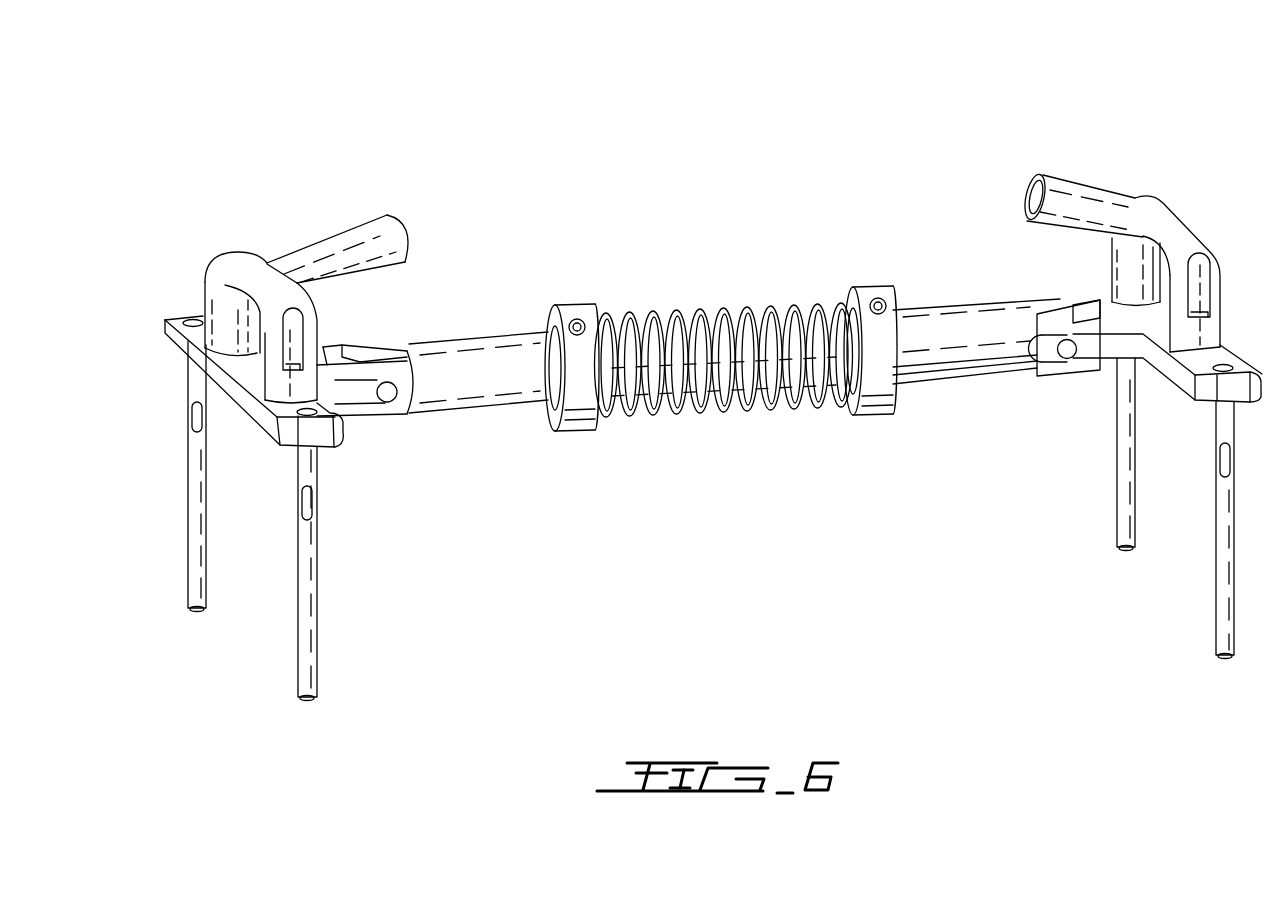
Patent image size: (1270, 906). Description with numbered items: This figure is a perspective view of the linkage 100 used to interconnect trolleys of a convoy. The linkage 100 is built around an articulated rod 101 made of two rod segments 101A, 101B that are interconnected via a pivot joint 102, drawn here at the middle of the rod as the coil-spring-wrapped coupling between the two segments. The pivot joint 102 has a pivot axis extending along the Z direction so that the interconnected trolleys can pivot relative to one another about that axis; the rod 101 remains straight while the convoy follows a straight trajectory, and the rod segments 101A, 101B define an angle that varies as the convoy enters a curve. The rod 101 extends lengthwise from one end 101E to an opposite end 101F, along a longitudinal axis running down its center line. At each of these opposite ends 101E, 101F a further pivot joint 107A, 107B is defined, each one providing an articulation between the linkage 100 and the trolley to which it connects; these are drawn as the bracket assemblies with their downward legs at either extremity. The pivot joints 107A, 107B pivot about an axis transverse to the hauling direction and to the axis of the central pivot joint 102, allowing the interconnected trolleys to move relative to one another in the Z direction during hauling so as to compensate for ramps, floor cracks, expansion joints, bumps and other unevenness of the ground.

The linkage 100 is at (185, 167).
The articulated rod 101 is at (480, 305).
The rod segment 101A is at (502, 387).
The rod segment 101B is at (960, 385).
The end of the rod 101E is at (375, 432).
The opposite end of the rod 101F is at (1067, 390).
The pivot joint 102 is at (745, 335).
The pivot joint 107A is at (386, 370).
The pivot joint 107B is at (1062, 330).